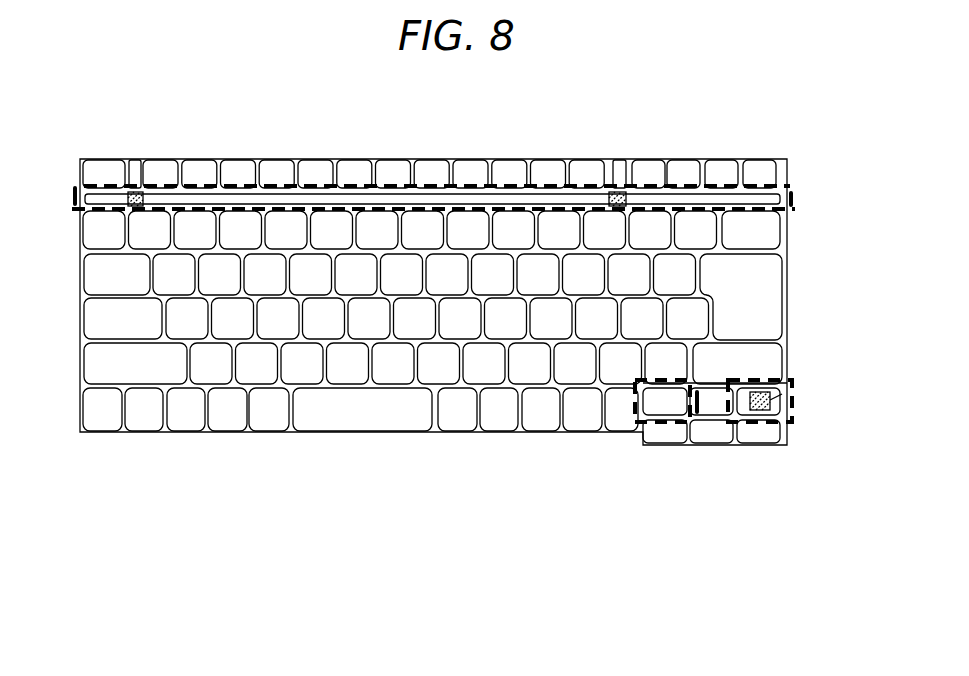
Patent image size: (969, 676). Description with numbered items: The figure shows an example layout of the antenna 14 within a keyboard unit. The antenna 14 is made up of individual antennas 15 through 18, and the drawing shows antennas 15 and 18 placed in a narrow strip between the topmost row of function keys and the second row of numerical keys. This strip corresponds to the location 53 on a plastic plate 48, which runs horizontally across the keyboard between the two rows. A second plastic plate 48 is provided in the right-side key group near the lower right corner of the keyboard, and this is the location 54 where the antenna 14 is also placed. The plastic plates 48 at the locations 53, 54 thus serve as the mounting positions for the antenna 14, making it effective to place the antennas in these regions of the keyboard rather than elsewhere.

The antenna 14 is at (792, 406).
The antenna 15 is at (137, 193).
The antenna 18 is at (618, 193).
The plastic plate 48 is at (74, 199).
The location 53 is at (802, 194).
The location 54 is at (757, 427).